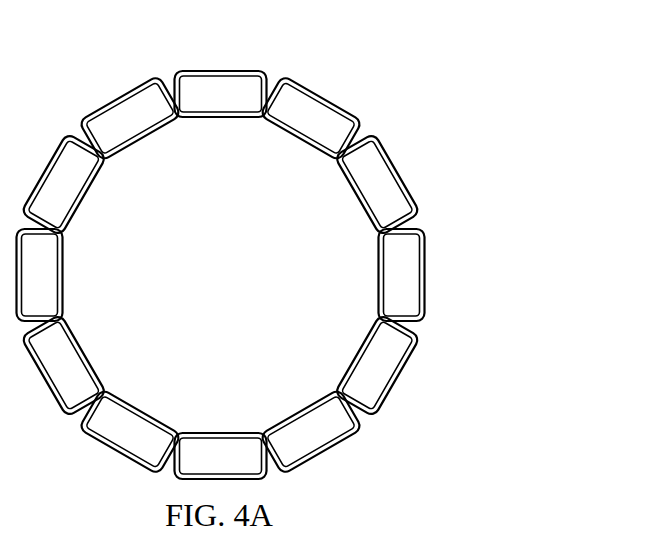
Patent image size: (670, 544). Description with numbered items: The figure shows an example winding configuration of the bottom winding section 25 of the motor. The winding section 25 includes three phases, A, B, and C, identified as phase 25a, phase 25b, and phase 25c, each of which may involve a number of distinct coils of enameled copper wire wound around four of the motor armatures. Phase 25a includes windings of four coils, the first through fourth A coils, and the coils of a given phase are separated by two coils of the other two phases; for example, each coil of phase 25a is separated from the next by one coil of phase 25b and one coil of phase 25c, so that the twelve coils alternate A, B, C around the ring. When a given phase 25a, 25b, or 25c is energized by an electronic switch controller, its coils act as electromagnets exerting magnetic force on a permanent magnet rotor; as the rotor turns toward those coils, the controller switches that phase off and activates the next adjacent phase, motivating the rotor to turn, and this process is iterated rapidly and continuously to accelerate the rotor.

The bottom winding section 25 is at (308, 239).
The phase A 25a is at (215, 71).
The phase B 25b is at (322, 100).
The phase C 25c is at (396, 144).